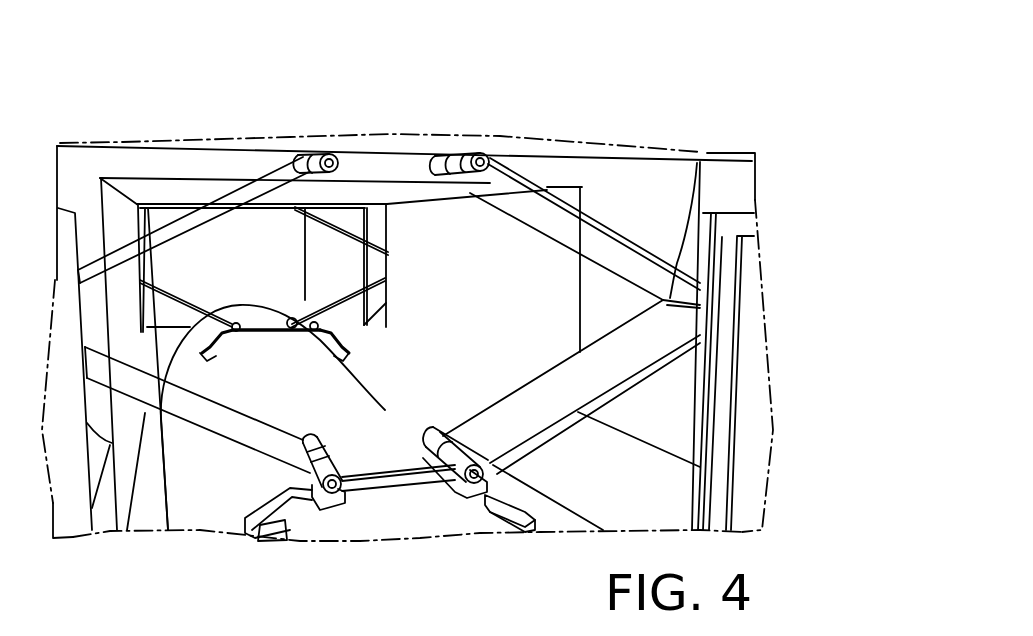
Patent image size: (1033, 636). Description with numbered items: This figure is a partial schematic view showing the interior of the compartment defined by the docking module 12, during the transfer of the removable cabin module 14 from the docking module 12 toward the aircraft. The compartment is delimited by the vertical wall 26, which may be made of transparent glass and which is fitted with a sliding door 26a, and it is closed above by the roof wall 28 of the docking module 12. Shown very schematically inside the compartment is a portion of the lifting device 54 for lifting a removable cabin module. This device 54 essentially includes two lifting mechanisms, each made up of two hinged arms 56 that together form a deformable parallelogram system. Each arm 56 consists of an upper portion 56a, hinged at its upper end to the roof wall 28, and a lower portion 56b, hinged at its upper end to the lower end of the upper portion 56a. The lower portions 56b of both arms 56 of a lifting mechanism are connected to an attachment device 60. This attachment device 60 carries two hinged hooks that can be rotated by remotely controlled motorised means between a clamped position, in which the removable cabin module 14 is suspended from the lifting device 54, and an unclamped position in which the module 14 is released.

The docking module 12 is at (691, 150).
The removable cabin module 14 is at (416, 511).
The vertical wall 26 is at (82, 185).
The sliding door 26a is at (720, 410).
The roof wall 28 is at (380, 147).
The lifting device 54 is at (605, 209).
The hinged arm 56 is at (230, 198).
The upper portion 56a is at (172, 227).
The lower portion 56b is at (213, 443).
The attachment device 60 is at (370, 493).